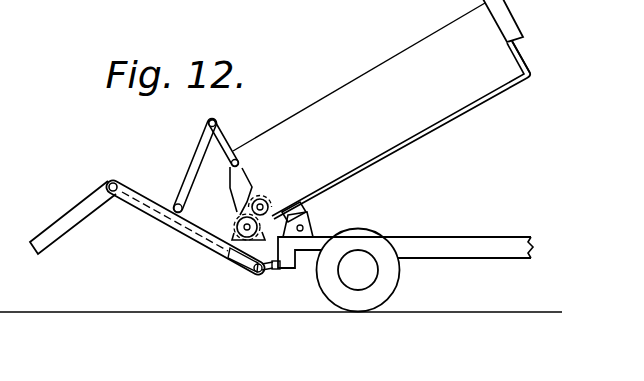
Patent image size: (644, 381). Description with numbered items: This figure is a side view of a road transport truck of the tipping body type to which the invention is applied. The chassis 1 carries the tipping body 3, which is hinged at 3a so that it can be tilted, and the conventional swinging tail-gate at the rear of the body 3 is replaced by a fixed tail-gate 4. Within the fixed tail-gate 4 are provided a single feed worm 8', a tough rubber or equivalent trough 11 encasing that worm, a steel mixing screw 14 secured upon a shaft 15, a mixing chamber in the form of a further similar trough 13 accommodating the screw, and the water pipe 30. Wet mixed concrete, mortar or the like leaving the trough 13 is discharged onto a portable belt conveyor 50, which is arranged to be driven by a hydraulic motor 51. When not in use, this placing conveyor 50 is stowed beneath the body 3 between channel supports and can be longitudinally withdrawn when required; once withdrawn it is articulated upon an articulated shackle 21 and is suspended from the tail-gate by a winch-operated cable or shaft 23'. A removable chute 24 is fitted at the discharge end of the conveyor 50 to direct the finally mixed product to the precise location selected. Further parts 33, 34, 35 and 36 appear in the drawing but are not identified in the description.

The chassis 1 is at (422, 250).
The tipping body 3 is at (321, 101).
The hinge 3a is at (311, 222).
The fixed tail-gate 4 is at (245, 170).
The feed worm 8' is at (282, 187).
The trough 11 is at (258, 198).
The trough 13 is at (272, 269).
The mixing screw 14 is at (236, 268).
The shaft 15 is at (214, 253).
The articulated shackle 21 is at (293, 257).
The winch-operated cable or shaft 23' is at (184, 165).
The removable chute 24 is at (62, 238).
The water pipe 30 is at (242, 217).
The stop block 33 is at (508, 24).
The end wall 34 is at (534, 68).
The floor plate 35 is at (483, 98).
The bracket 36 is at (305, 212).
The portable belt conveyor 50 is at (148, 217).
The hydraulic motor 51 is at (113, 182).